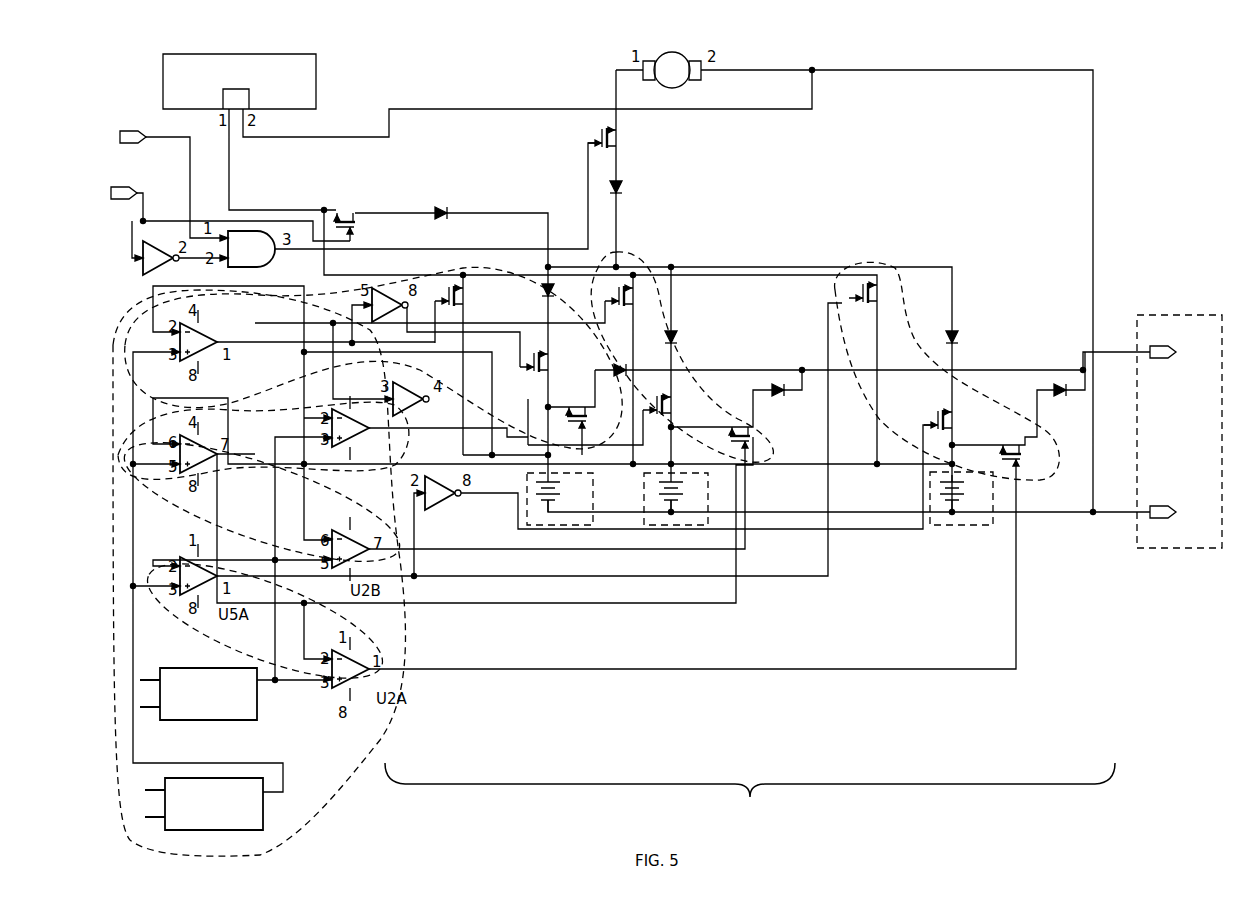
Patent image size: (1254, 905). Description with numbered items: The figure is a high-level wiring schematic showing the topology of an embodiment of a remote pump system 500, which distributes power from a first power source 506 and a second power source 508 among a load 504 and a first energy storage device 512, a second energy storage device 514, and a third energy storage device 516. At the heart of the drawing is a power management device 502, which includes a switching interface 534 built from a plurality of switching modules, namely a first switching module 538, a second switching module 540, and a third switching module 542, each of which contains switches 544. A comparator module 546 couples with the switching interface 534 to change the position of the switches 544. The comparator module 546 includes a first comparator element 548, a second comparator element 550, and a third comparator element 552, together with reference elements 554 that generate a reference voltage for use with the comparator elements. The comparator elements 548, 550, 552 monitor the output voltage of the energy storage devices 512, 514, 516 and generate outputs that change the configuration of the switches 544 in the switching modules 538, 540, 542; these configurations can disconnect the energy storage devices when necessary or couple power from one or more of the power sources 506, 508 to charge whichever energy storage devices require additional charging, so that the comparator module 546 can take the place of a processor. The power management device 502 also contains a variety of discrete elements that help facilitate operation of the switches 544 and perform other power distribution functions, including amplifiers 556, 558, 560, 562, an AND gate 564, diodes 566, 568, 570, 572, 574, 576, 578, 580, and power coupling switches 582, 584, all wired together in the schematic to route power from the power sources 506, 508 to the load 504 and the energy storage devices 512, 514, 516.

The pump system 500 is at (1155, 93).
The power management device 502 is at (750, 789).
The load 504 is at (1183, 307).
The first power source 506 is at (239, 81).
The second power source 508 is at (684, 85).
The first energy storage device 512 is at (575, 530).
The second energy storage device 514 is at (680, 530).
The third energy storage device 516 is at (960, 530).
The switching interface 534 is at (796, 212).
The first switching module 538 is at (490, 270).
The second switching module 540 is at (656, 252).
The third switching module 542 is at (898, 256).
The switches 544 is at (1020, 456).
The comparator module 546 is at (318, 832).
The first comparator element 548 is at (138, 333).
The second comparator element 550 is at (128, 442).
The third comparator element 552 is at (128, 558).
The reference elements 554 is at (253, 720).
The amplifier 556 is at (141, 248).
The amplifier 558 is at (370, 283).
The amplifier 560 is at (412, 390).
The amplifier 562 is at (442, 505).
The AND gate 564 is at (236, 218).
The diode 566 is at (446, 208).
The diode 568 is at (624, 188).
The diode 570 is at (546, 283).
The diode 572 is at (620, 366).
The diode 574 is at (680, 334).
The diode 576 is at (783, 395).
The diode 578 is at (960, 328).
The diode 580 is at (1054, 383).
The power coupling switch 582 is at (355, 207).
The power coupling switch 584 is at (602, 123).